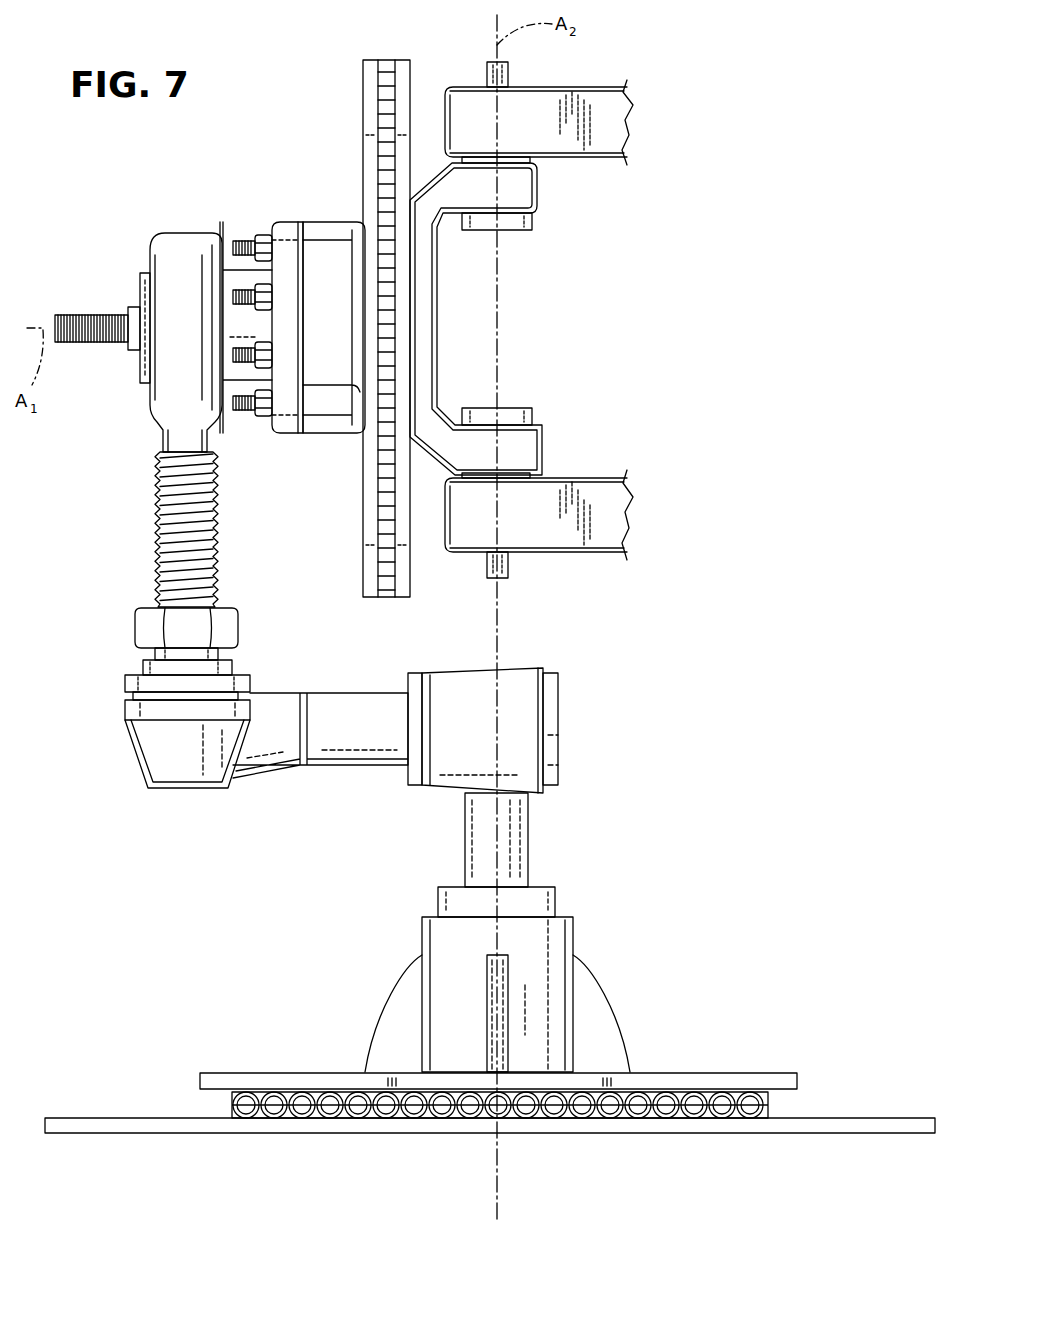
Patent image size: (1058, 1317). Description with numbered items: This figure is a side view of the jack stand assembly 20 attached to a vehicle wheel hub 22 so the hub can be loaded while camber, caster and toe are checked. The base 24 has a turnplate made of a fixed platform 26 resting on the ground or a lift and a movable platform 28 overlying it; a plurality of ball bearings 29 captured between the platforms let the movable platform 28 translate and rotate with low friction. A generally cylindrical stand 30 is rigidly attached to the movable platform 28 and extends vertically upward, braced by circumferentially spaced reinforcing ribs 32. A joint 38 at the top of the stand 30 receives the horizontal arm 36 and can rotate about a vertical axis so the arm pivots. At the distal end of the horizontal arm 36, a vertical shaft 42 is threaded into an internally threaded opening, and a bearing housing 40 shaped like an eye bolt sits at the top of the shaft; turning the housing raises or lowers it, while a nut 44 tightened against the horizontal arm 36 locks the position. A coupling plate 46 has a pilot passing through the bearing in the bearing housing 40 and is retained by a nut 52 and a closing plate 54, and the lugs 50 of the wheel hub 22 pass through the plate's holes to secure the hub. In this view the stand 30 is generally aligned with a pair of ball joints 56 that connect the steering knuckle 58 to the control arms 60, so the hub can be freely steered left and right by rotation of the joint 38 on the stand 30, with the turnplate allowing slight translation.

The jack stand assembly 20 is at (128, 785).
The wheel hub 22 is at (341, 228).
The base 24 is at (565, 718).
The fixed platform 26 is at (848, 1120).
The movable platform 28 is at (760, 1074).
The ball bearings 29 is at (350, 1118).
The stand 30 is at (545, 945).
The reinforcing ribs 32 is at (492, 1018).
The horizontal arm 36 is at (366, 742).
The joint 38 is at (523, 685).
The bearing housing 40 is at (175, 430).
The vertical shaft 42 is at (180, 532).
The nut 44 is at (150, 631).
The coupling plate 46 is at (285, 233).
The lugs 50 is at (233, 403).
The nut 52 is at (136, 345).
The closing plate 54 is at (146, 376).
The ball joints 56 is at (513, 410).
The steering knuckle 58 is at (424, 438).
The control arms 60 is at (590, 147).